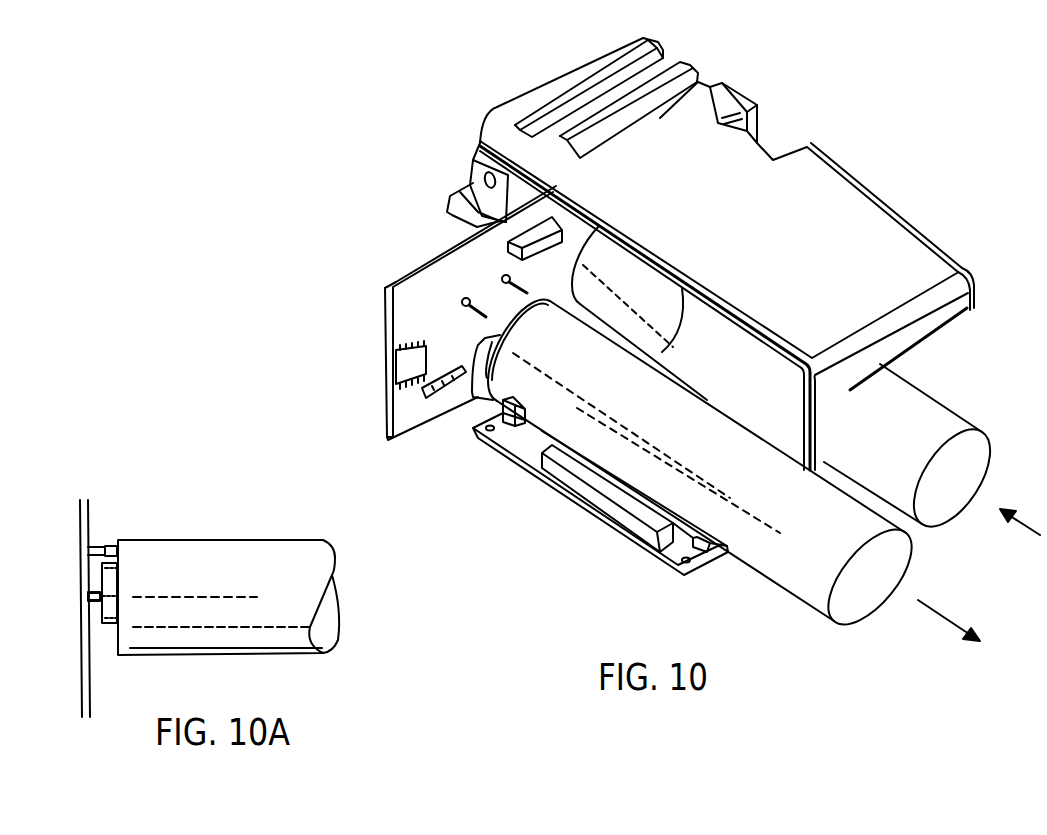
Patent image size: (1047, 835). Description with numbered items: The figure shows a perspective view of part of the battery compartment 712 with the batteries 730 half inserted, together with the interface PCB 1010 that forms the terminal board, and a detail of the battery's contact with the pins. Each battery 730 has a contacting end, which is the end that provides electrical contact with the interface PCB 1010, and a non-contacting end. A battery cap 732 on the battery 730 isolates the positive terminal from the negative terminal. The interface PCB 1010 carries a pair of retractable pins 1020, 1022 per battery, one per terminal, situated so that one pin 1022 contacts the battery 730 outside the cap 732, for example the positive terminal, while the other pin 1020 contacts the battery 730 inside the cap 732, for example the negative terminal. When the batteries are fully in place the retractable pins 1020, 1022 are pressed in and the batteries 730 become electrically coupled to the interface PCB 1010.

In FIG. 10, the battery compartment 712 is at (875, 172).
In FIG. 10, the battery 730 is at (842, 508).
In FIG. 10A, the battery 730 is at (317, 578).
In FIG. 10, the battery cap 732 is at (477, 388).
In FIG. 10A, the battery cap 732 is at (115, 573).
In FIG. 10, the interface PCB 1010 is at (388, 354).
In FIG. 10A, the interface PCB 1010 is at (80, 683).
In FIG. 10, the retractable pin 1020 is at (463, 308).
In FIG. 10A, the retractable pin 1020 is at (96, 598).
In FIG. 10, the retractable pin 1022 is at (501, 281).
In FIG. 10A, the retractable pin 1022 is at (100, 547).